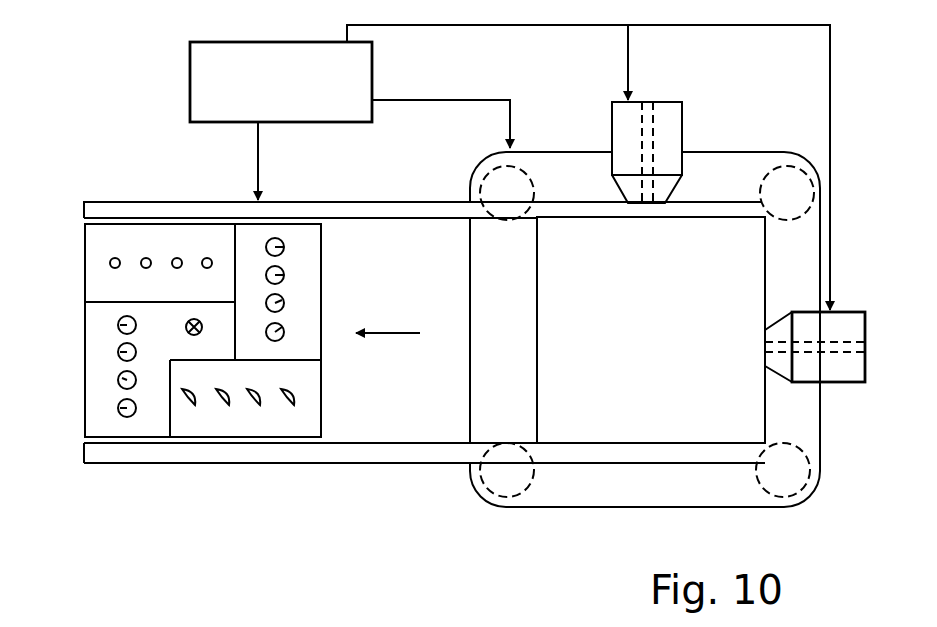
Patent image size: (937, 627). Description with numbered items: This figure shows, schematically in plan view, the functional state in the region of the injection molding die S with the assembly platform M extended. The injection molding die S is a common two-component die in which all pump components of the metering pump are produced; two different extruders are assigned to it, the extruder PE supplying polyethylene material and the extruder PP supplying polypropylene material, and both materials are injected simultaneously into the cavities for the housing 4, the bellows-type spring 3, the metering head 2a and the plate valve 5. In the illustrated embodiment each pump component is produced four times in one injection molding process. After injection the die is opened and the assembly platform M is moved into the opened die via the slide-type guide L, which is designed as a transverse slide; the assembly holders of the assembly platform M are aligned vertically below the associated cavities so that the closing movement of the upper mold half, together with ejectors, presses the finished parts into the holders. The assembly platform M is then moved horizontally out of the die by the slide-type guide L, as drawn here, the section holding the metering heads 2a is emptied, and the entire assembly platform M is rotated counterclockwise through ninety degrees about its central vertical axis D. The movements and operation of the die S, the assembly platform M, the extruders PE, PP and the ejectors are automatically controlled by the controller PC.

The injection molding die S is at (549, 142).
The slide-type guide L is at (387, 452).
The assembly platform M is at (310, 223).
The plate valve 5 is at (207, 258).
The bellows-type spring 3 is at (118, 408).
The central vertical axis D is at (188, 334).
The housing 4 is at (283, 327).
The metering head 2a is at (190, 404).
The controller PC is at (510, 167).
The extruder PE is at (668, 124).
The extruder PP is at (843, 327).